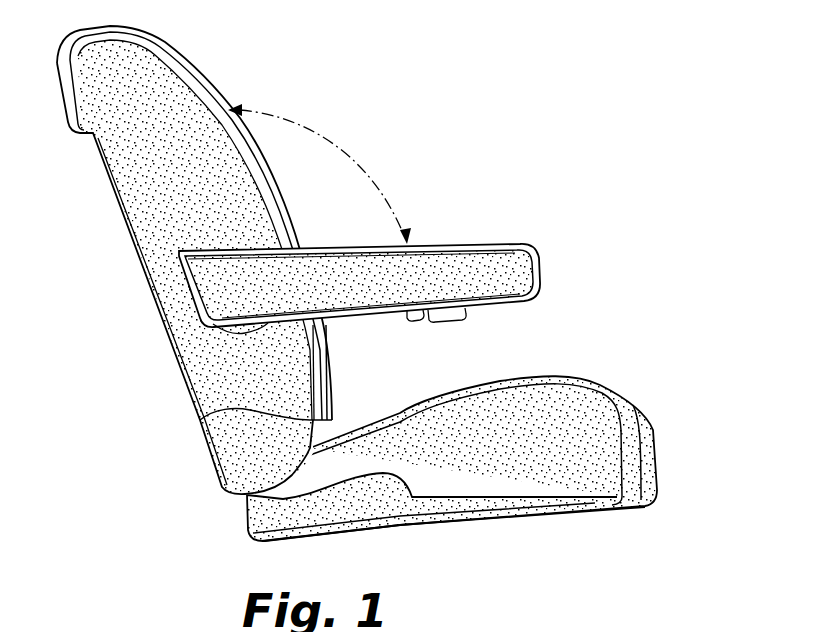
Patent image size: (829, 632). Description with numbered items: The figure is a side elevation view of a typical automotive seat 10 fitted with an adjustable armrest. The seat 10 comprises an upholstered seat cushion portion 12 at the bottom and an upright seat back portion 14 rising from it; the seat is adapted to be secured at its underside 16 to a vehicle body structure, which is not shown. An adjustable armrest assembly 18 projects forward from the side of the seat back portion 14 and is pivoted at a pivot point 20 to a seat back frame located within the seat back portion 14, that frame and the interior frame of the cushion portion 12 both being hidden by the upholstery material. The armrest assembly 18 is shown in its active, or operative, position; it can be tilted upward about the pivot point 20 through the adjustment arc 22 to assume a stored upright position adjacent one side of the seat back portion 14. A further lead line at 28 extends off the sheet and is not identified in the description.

The seat 10 is at (381, 307).
The seat cushion portion 12 is at (662, 460).
The seat back portion 14 is at (130, 230).
The underside 16 is at (492, 527).
The adjustable armrest assembly 18 is at (323, 263).
The pivot point 20 is at (227, 288).
The adjustment arc 22 is at (360, 156).
The vehicle floor 28 is at (30, 631).